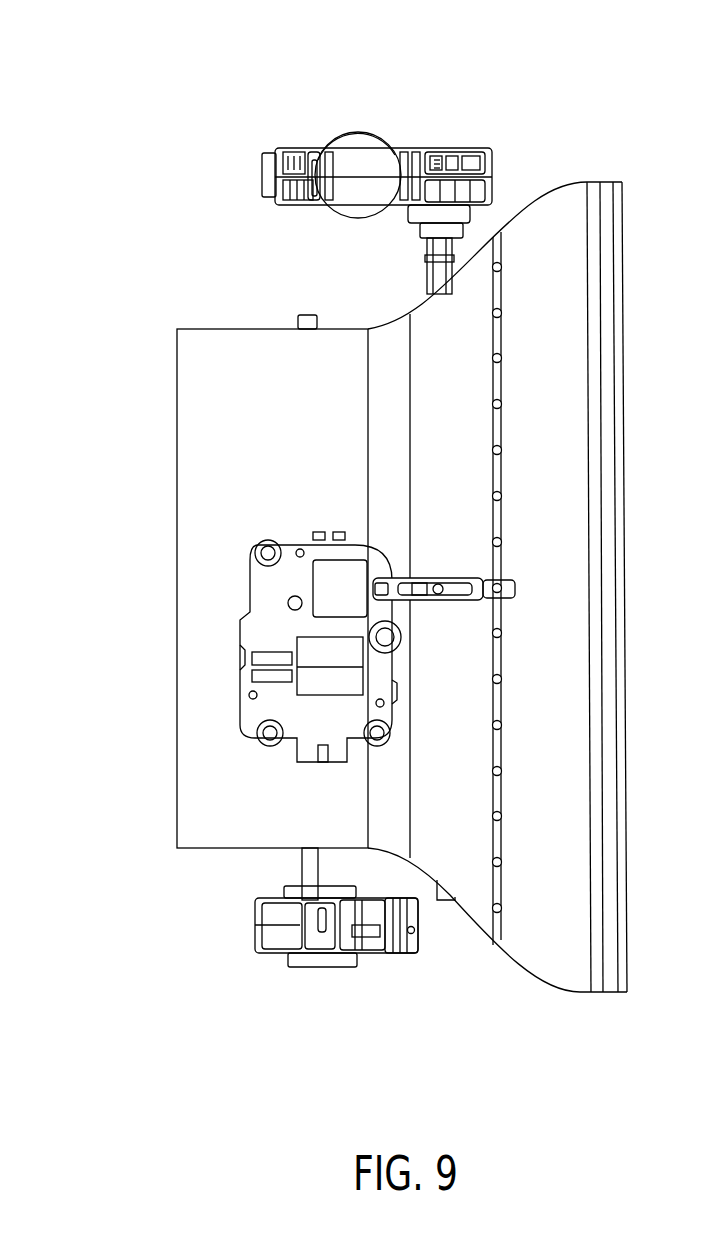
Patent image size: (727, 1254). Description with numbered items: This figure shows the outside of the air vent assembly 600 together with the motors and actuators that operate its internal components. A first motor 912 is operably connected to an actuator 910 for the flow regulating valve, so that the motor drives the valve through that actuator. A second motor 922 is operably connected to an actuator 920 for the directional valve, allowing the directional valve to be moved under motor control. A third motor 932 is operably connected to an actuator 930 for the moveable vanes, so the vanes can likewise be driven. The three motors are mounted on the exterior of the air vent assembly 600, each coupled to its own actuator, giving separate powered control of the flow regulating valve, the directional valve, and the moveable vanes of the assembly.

The air vent assembly 600 is at (124, 72).
The actuator 910 is at (305, 862).
The first motor 912 is at (310, 968).
The actuator 920 is at (443, 577).
The second motor 922 is at (270, 595).
The actuator 930 is at (428, 252).
The third motor 932 is at (396, 148).